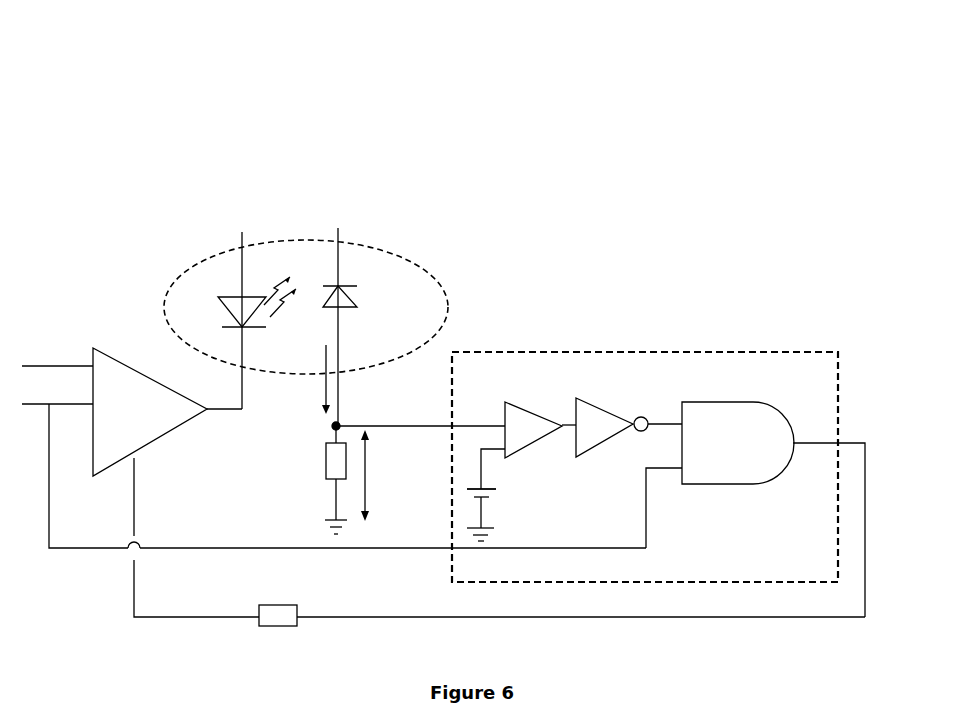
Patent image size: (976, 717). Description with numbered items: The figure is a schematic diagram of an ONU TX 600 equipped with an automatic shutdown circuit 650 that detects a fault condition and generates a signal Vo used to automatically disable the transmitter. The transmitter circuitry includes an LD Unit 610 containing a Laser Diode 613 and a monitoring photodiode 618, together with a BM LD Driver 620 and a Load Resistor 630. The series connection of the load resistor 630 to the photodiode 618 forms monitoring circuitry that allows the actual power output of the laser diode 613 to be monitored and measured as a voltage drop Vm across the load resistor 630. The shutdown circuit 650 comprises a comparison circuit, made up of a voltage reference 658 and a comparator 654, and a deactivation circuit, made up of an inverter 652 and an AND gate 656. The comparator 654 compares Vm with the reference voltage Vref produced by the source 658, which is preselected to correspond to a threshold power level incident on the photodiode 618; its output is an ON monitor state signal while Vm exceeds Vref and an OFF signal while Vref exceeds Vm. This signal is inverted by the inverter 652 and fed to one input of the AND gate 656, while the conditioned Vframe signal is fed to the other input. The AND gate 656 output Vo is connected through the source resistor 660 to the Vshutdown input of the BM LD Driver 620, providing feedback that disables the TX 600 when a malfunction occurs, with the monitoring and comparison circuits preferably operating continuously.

The ONU TX 600 is at (609, 94).
The LD Unit 610 is at (447, 300).
The Laser Diode 613 is at (222, 295).
The monitoring photodiode 618 is at (348, 291).
The BM LD Driver 620 is at (121, 363).
The Load Resistor 630 is at (326, 458).
The automatic shutdown circuit 650 is at (677, 352).
The inverter 652 is at (612, 414).
The comparator 654 is at (547, 434).
The AND gate 656 is at (724, 402).
The voltage reference 658 is at (496, 491).
The source resistor 660 is at (277, 605).